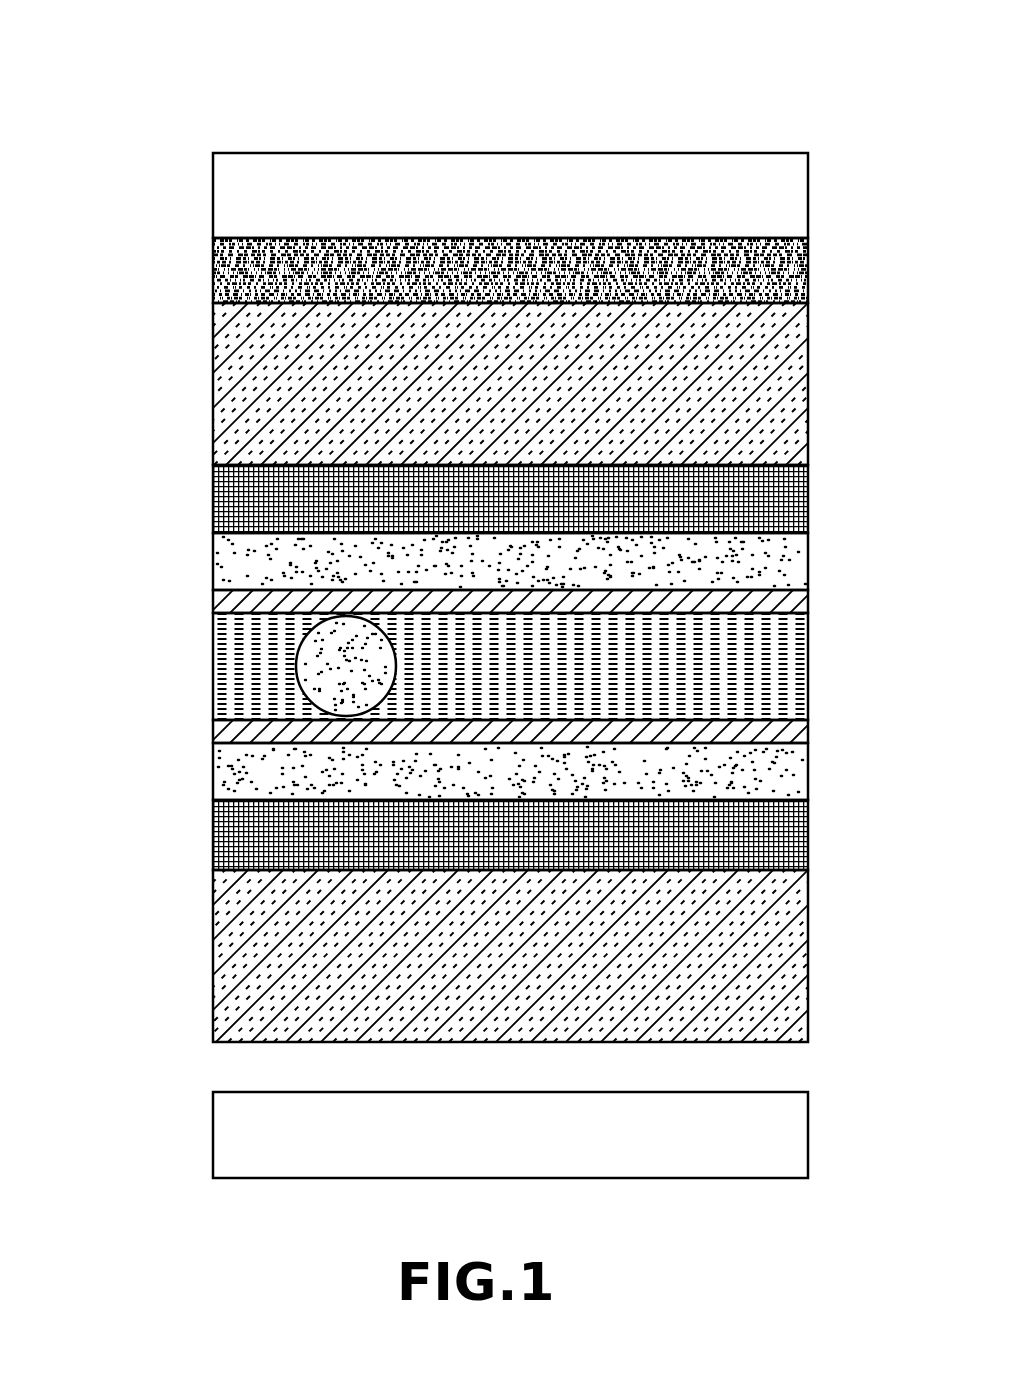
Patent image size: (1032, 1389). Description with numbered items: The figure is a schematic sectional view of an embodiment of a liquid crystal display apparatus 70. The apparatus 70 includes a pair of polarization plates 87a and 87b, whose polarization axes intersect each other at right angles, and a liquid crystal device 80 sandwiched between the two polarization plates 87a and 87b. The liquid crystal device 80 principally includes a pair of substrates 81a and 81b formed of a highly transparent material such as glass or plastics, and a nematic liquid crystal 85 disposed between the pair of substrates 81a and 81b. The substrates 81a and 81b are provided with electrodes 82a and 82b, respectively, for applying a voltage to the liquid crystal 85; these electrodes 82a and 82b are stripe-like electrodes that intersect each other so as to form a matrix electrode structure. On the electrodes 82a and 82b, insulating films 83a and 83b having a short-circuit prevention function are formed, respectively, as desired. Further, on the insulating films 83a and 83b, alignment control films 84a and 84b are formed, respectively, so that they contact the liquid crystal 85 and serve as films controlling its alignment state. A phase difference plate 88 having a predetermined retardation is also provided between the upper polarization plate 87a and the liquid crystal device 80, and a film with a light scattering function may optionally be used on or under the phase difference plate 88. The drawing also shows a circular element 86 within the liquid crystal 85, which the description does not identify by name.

The liquid crystal display apparatus 70 is at (822, 100).
The liquid crystal device 80 is at (150, 366).
The substrate 81a is at (808, 397).
The substrate 81b is at (808, 950).
The electrode 82a is at (808, 502).
The electrode 82b is at (808, 838).
The insulating film 83a is at (808, 555).
The insulating film 83b is at (808, 788).
The alignment control film 84a is at (808, 605).
The alignment control film 84b is at (808, 733).
The nematic liquid crystal 85 is at (808, 670).
The spacer 86 is at (313, 673).
The polarization plate 87a is at (808, 200).
The polarization plate 87b is at (808, 1135).
The phase difference plate 88 is at (808, 277).